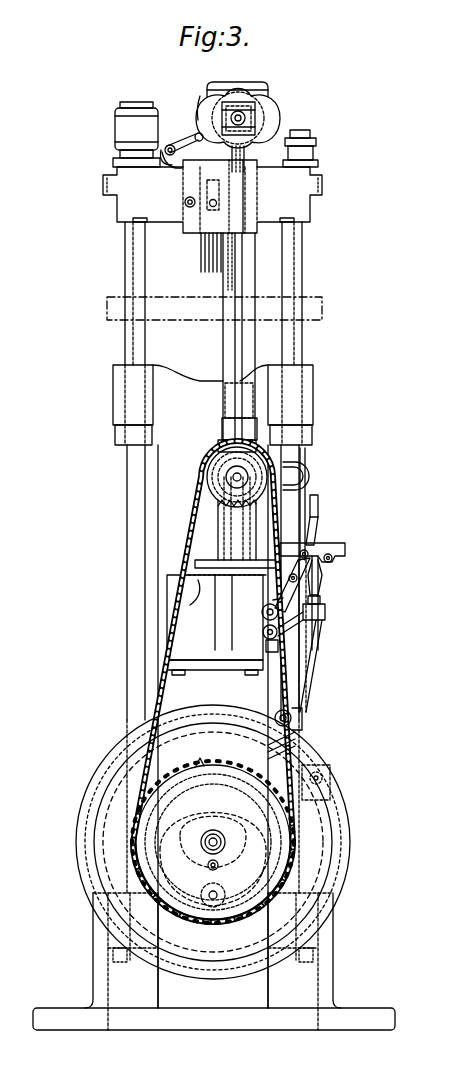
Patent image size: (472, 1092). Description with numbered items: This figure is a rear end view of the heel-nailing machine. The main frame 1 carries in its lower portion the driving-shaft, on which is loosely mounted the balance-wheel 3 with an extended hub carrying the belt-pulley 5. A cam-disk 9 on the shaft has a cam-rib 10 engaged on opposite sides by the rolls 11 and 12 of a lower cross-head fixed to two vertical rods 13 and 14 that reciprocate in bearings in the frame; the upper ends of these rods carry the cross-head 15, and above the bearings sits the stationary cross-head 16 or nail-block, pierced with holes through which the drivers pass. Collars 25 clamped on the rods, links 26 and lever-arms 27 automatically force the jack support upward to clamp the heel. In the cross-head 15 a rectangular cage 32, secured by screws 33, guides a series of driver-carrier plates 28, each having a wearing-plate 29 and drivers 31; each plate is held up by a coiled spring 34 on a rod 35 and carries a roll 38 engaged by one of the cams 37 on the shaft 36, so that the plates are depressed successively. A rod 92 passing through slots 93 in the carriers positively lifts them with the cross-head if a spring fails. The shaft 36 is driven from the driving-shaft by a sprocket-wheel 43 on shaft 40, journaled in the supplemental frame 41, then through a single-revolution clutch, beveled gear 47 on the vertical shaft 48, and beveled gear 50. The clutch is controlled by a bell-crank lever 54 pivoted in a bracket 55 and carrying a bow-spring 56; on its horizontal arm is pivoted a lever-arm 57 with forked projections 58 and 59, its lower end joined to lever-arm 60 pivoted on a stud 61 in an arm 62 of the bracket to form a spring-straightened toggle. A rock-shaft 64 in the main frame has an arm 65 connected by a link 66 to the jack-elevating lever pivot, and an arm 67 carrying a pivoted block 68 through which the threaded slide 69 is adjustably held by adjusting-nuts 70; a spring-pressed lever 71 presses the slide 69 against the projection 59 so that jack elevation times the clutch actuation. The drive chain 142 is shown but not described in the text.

The main frame 1 is at (50, 1008).
The balance-wheel 3 is at (88, 792).
The loose belt-pulley 5 is at (326, 822).
The cam-disk 9 is at (218, 764).
The cam-rib 10 is at (250, 885).
The stud or roll 11 is at (210, 900).
The stud or roll 12 is at (216, 838).
The vertical rod 13 is at (127, 587).
The vertical rod 14 is at (302, 456).
The cross-head 15 is at (310, 210).
The stationary cross-head 16 is at (315, 302).
The collar 25 is at (322, 775).
The link 26 is at (302, 720).
The lever-arm 27 is at (274, 717).
The plate 28 is at (200, 236).
The wearing-plate 29 is at (197, 764).
The driver 31 is at (212, 268).
The rectangular frame or cage 32 is at (250, 168).
The screw 33 is at (184, 202).
The coiled spring 34 is at (190, 140).
The rod 35 is at (170, 160).
The shaft 36 is at (260, 104).
The cam 37 is at (200, 95).
The roll 38 is at (210, 137).
The shaft 40 is at (233, 477).
The supplemental frame 41 is at (218, 512).
The sprocket-wheel 43 is at (206, 456).
The beveled gear 47 is at (262, 92).
The vertical shaft 48 is at (275, 152).
The beveled gear 50 is at (256, 118).
The bell-crank lever 54 is at (291, 520).
The bracket 55 is at (250, 556).
The bow-spring 56 is at (304, 478).
The lever-arm 57 is at (312, 582).
The projection 58 is at (306, 543).
The projection 59 is at (322, 546).
The lever-arm 60 is at (290, 598).
The stud 61 is at (262, 613).
The arm 62 is at (243, 585).
The rock-shaft 64 is at (263, 634).
The arm 65 is at (320, 612).
The link 66 is at (304, 672).
The arm 67 is at (314, 638).
The block 68 is at (326, 622).
The slide 69 is at (319, 508).
The adjusting-nut 70 is at (326, 630).
The spring-pressed lever 71 is at (330, 560).
The rod 92 is at (209, 206).
The slot 93 is at (213, 186).
The drive chain 142 is at (163, 697).